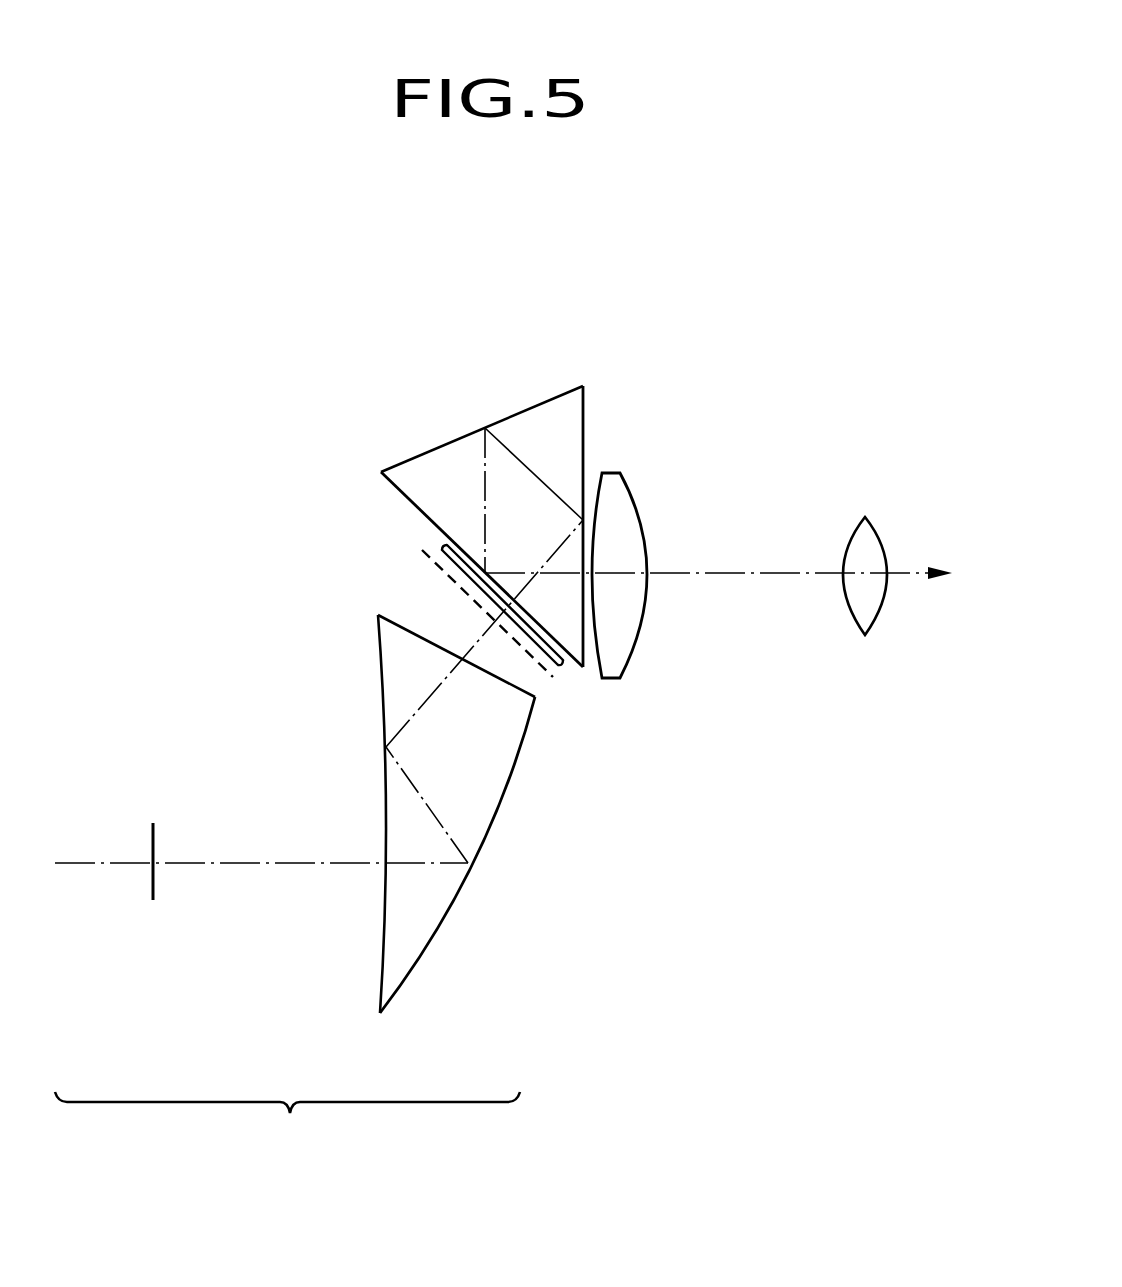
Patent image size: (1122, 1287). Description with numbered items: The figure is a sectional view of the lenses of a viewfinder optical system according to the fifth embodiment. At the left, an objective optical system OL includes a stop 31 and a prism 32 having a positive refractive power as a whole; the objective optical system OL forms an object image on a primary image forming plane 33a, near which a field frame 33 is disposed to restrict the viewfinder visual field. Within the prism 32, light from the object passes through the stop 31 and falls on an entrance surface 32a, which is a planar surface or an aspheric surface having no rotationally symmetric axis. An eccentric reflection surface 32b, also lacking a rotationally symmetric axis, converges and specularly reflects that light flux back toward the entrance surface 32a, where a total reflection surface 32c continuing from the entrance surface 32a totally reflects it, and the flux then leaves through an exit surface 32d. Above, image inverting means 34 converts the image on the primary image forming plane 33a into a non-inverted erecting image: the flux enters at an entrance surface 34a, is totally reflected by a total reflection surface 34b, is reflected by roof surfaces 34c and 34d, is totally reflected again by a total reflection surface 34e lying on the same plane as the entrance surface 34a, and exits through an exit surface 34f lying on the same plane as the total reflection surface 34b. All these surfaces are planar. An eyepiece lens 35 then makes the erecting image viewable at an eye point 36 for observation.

The stop 31 is at (152, 898).
The prism 32 is at (387, 808).
The entrance surface 32a is at (311, 814).
The eccentric reflection surface 32b is at (453, 900).
The total reflection surface 32c is at (385, 805).
The exit surface 32d is at (405, 612).
The field frame 33 is at (440, 543).
The primary image forming plane 33a is at (440, 568).
The image inverting means 34 is at (499, 528).
The entrance surface 34a is at (422, 537).
The total reflection surface 34b is at (660, 522).
The roof surface 34c is at (433, 467).
The roof surface 34d is at (540, 400).
The total reflection surface 34e is at (390, 483).
The exit surface 34f is at (588, 397).
The eyepiece lens 35 is at (615, 485).
The eye point 36 is at (855, 528).
The objective optical system OL is at (287, 1123).